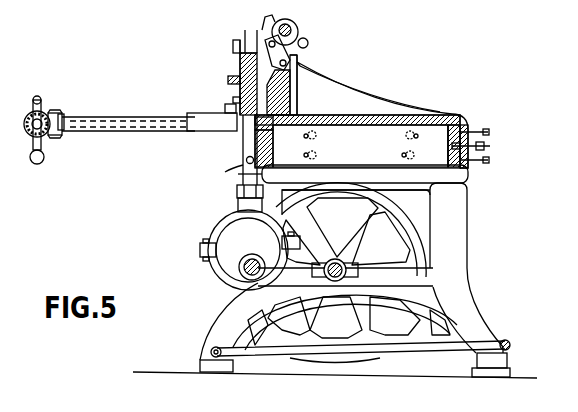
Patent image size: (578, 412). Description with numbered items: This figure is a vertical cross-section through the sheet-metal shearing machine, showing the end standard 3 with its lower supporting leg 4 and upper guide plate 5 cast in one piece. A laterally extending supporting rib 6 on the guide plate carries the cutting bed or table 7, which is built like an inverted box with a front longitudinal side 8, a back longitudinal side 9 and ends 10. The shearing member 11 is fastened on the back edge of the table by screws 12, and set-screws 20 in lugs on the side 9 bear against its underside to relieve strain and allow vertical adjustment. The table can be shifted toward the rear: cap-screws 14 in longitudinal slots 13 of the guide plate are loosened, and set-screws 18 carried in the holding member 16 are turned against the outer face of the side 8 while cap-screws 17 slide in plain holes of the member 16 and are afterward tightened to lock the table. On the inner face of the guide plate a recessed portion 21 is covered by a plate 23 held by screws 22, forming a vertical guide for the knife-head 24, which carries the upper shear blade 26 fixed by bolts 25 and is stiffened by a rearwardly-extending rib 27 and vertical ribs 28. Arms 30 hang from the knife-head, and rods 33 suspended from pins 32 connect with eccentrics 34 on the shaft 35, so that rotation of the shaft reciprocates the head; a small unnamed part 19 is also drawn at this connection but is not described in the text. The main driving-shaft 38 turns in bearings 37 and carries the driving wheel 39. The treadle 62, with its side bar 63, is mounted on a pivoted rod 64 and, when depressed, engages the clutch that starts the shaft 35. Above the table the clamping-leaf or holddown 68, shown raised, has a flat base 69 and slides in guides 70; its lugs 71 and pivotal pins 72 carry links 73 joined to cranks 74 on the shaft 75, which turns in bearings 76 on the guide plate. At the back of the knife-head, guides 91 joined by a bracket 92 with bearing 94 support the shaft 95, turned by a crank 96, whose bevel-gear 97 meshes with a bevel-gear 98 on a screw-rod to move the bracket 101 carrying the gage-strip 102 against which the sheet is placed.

The end standard 3 is at (470, 280).
The lower supporting leg 4 is at (217, 313).
The upper guide plate 5 is at (375, 100).
The supporting rib 6 is at (411, 181).
The cutting bed or table 7 is at (402, 116).
The longitudinal side 8 is at (450, 158).
The longitudinal side 9 is at (277, 152).
The table end 10 is at (357, 141).
The shearing member 11 is at (246, 140).
The bolts or screws 12 is at (276, 132).
The longitudinal slot 13 is at (372, 153).
The cap-screw 14 is at (357, 145).
The holding member 16 is at (468, 170).
The cap-screw 17 is at (486, 146).
The set-screw 18 is at (482, 131).
The pivot pin 19 is at (245, 152).
The set-screw 20 is at (263, 172).
The recessed portion 21 is at (251, 33).
The screws or bolts 22 is at (236, 47).
The plate 23 is at (242, 36).
The knife-head 24 is at (240, 55).
The bolts 25 is at (236, 100).
The upper shear blade 26 is at (240, 137).
The rearwardly-extending rib 27 is at (232, 80).
The vertical rib 28 is at (240, 64).
The arm 30 is at (224, 172).
The pin 32 is at (242, 177).
The rod 33 is at (240, 191).
The eccentric 34 is at (250, 244).
The shaft 35 is at (245, 268).
The bearing 37 is at (337, 288).
The main driving-shaft 38 is at (357, 258).
The driving wheel 39 is at (362, 206).
The treadle 62 is at (510, 342).
The side bar 63 is at (437, 348).
The rod 64 is at (210, 352).
The clamping-leaf or holddown 68 is at (298, 86).
The flat base 69 is at (273, 92).
The guide 70 is at (298, 106).
The perforated ear or lug 71 is at (300, 71).
The pivotal pin 72 is at (300, 63).
The link 73 is at (275, 56).
The crank 74 is at (290, 22).
The shaft 75 is at (300, 32).
The bearing 76 is at (308, 44).
The rearwardly-extending guide 91 is at (142, 133).
The bracket 92 is at (56, 135).
The bearing 94 is at (68, 118).
The shaft 95 is at (30, 130).
The crank 96 is at (43, 160).
The bevel-gear 97 is at (26, 120).
The bevel-gear 98 is at (50, 110).
The bracket 101 is at (200, 113).
The gage-strip 102 is at (230, 104).